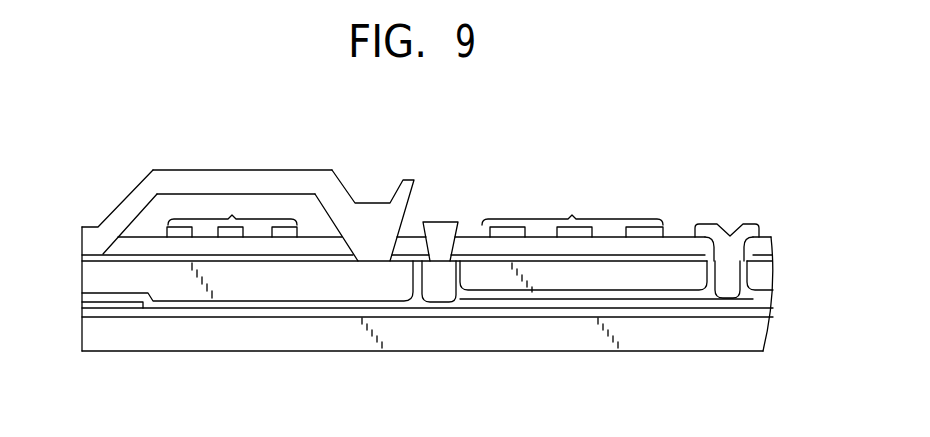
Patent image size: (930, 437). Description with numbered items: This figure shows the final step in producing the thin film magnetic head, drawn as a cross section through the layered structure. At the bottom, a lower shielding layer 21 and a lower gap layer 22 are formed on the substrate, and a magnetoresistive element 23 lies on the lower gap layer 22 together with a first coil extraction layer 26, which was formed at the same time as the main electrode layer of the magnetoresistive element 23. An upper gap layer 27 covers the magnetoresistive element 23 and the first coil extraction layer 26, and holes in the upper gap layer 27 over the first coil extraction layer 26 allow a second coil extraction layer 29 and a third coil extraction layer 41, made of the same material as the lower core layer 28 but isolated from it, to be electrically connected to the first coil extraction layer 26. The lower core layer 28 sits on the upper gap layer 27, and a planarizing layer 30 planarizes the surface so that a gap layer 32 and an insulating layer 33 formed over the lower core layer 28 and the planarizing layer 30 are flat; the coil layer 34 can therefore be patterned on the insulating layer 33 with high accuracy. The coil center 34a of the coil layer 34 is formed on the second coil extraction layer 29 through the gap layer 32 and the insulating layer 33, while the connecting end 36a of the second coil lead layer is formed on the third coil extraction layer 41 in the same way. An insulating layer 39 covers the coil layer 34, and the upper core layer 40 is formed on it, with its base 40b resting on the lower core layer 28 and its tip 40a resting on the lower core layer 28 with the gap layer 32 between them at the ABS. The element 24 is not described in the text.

The lower shielding layer 21 is at (734, 328).
The lower gap layer 22 is at (185, 305).
The magnetoresistive element 23 is at (80, 308).
The light shielding layer 24 is at (113, 304).
The first coil extraction layer 26 is at (495, 303).
The upper gap layer 27 is at (315, 306).
The lower core layer 28 is at (242, 293).
The second coil extraction layer 29 is at (434, 291).
The planarizing layer 30 is at (632, 273).
The gap layer 32 is at (680, 253).
The insulating layer 33 is at (323, 250).
The coil layer 34 is at (229, 214).
The coil center 34a is at (442, 220).
The connecting end 36a is at (762, 231).
The insulating layer 39 is at (173, 212).
The upper core layer 40 is at (273, 176).
The tip 40a is at (99, 231).
The base 40b is at (375, 220).
The third coil extraction layer 41 is at (737, 272).